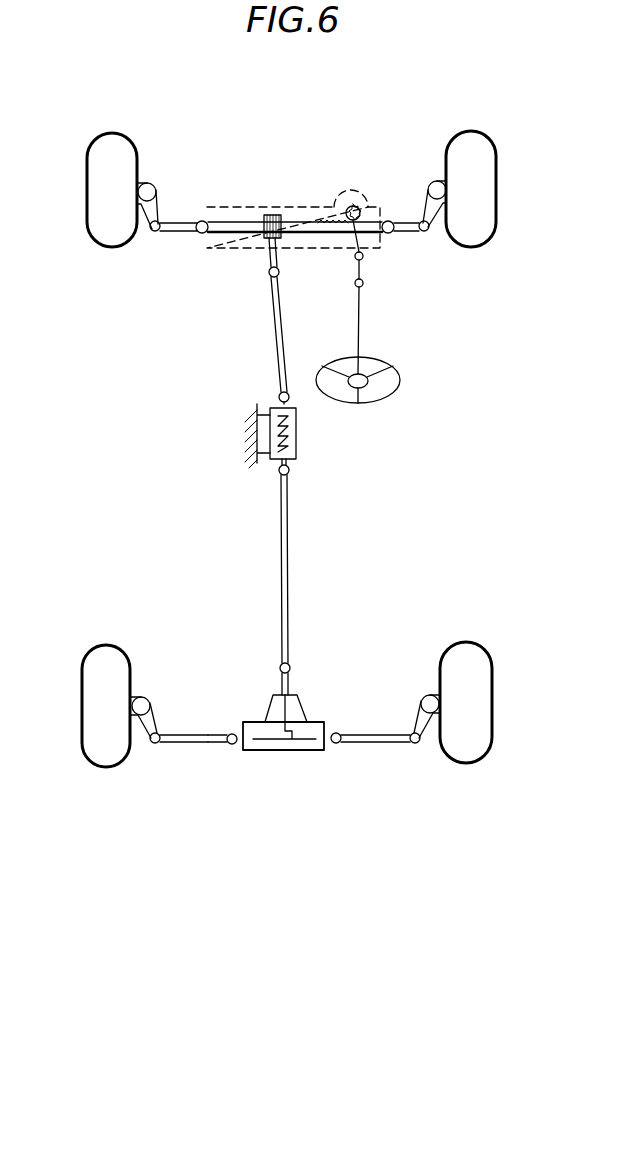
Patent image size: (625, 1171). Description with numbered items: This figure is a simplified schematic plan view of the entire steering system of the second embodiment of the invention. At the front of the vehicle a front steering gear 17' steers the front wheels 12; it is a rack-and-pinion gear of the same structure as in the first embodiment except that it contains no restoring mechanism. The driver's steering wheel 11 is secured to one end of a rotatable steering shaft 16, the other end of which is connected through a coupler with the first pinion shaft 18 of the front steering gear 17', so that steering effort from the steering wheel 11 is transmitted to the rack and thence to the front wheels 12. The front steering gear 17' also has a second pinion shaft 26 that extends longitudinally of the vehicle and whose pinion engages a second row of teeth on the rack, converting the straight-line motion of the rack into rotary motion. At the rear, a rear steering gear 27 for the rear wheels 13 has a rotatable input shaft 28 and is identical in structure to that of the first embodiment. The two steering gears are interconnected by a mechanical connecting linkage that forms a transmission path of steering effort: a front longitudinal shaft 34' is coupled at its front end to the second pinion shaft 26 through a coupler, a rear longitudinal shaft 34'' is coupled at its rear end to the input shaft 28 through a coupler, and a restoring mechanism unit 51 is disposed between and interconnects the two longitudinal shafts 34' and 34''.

The front wheels 12 is at (103, 153).
The rear wheels 13 is at (103, 750).
The front steering gear 17' is at (295, 173).
The first pinion shaft 18 is at (357, 242).
The steering shaft 16 is at (360, 325).
The steering wheel 11 is at (400, 376).
The second pinion shaft 26 is at (268, 255).
The front longitudinal shaft 34' is at (240, 320).
The restoring mechanism unit 51 is at (297, 434).
The rear longitudinal shaft 34'' is at (330, 537).
The input shaft 28 is at (280, 676).
The rear steering gear 27 is at (283, 752).